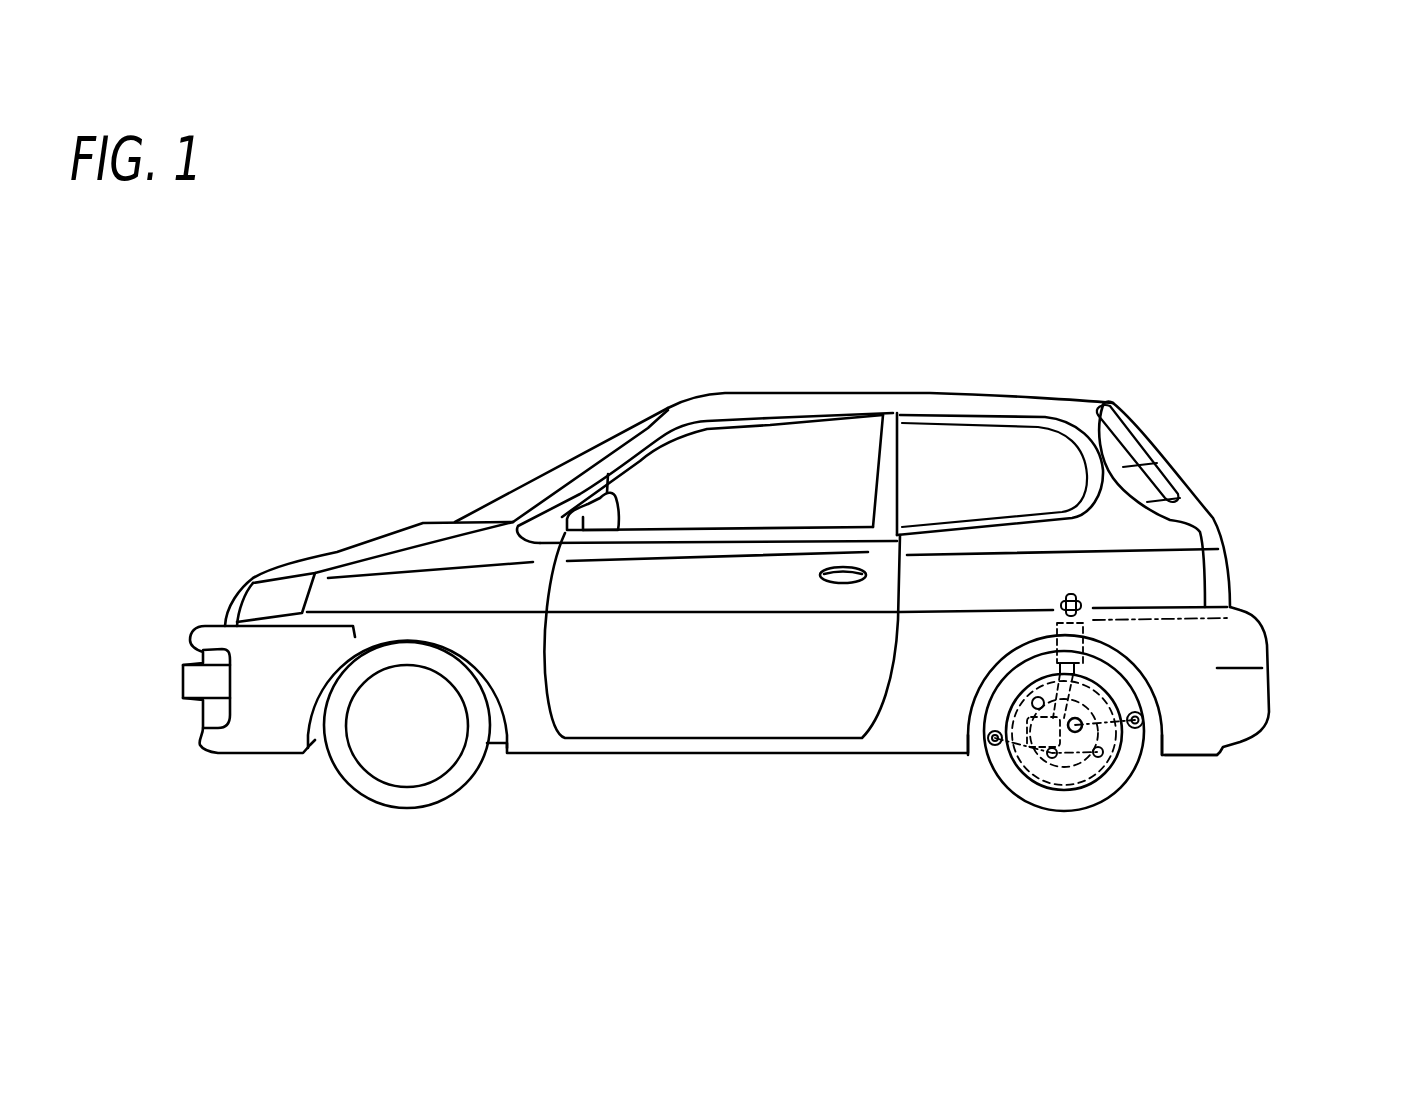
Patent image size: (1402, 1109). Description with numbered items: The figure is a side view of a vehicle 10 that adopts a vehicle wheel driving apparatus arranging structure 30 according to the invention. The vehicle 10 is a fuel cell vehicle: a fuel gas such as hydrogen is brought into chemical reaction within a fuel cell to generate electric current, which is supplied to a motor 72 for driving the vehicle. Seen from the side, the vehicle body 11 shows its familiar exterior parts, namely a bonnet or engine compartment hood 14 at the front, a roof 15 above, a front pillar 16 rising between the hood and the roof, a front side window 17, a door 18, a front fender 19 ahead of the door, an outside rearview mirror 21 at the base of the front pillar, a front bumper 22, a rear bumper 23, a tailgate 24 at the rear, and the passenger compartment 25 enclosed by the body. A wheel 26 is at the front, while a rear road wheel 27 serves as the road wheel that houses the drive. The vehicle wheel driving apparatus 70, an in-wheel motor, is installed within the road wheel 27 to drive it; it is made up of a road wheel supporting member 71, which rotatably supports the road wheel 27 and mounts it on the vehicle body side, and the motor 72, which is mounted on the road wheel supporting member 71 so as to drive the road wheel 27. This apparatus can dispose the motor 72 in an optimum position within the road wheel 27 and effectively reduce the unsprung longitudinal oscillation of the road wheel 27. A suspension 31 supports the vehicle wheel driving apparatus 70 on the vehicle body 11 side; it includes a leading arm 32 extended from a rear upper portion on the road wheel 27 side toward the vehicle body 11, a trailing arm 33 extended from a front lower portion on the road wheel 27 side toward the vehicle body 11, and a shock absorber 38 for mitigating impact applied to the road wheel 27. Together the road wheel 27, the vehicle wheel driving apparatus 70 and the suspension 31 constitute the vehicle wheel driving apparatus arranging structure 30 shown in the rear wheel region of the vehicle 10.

The vehicle 10 is at (352, 272).
The vehicle body 11 is at (373, 390).
The bonnet or engine compartment hood 14 is at (293, 570).
The roof 15 is at (935, 391).
The front pillar 16 is at (607, 456).
The front side window 17 is at (533, 477).
The door 18 is at (647, 727).
The front fender 19 is at (388, 597).
The outside rearview mirror 21 is at (597, 507).
The front bumper 22 is at (193, 670).
The rear bumper 23 is at (1262, 633).
The tailgate 24 is at (1228, 542).
The passenger compartment 25 is at (772, 445).
The wheel 26 is at (397, 824).
The rear road wheel 27 is at (1068, 820).
The vehicle wheel driving apparatus arranging structure 30 is at (1037, 763).
The suspension 31 is at (1117, 760).
The leading arm 32 is at (1127, 745).
The trailing arm 33 is at (1010, 755).
The shock absorber 38 is at (1082, 598).
The vehicle wheel driving apparatus 70 is at (1070, 765).
The road wheel supporting member 71 is at (1029, 712).
The motor 72 is at (1085, 760).